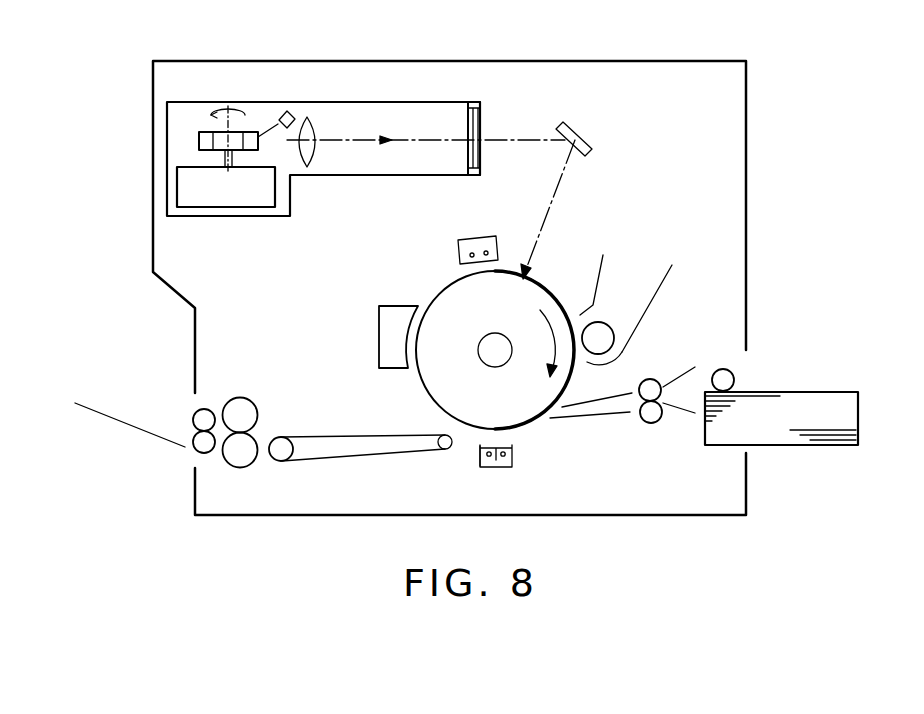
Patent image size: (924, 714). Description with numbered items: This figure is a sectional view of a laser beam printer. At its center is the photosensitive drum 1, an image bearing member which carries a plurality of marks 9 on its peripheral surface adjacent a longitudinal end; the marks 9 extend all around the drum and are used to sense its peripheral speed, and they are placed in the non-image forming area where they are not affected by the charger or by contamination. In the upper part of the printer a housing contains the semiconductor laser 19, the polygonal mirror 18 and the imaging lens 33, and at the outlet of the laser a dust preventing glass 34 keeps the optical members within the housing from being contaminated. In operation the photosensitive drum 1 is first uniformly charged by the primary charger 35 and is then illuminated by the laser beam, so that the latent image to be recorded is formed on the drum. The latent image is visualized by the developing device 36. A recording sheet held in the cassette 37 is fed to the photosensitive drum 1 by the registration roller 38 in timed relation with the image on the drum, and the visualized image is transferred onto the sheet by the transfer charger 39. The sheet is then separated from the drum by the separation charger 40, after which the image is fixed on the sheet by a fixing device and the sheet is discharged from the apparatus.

The photosensitive drum 1 is at (437, 298).
The marks 9 is at (392, 338).
The polygonal mirror 18 is at (198, 142).
The semiconductor laser 19 is at (285, 112).
The imaging lens 33 is at (312, 122).
The dust preventing glass 34 is at (477, 130).
The primary charger 35 is at (458, 252).
The developing device 36 is at (638, 302).
The cassette 37 is at (798, 403).
The registration roller 38 is at (651, 420).
The transfer charger 39 is at (512, 458).
The separation charger 40 is at (478, 458).